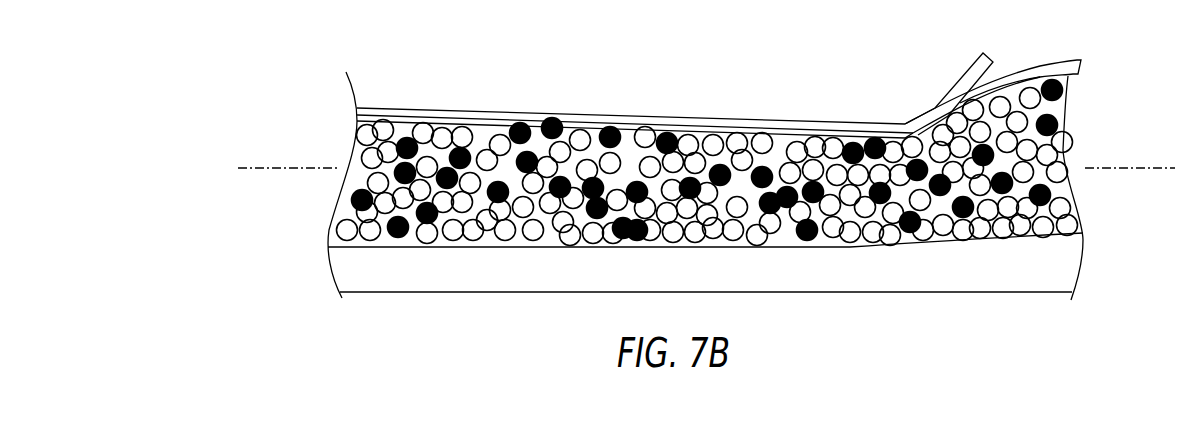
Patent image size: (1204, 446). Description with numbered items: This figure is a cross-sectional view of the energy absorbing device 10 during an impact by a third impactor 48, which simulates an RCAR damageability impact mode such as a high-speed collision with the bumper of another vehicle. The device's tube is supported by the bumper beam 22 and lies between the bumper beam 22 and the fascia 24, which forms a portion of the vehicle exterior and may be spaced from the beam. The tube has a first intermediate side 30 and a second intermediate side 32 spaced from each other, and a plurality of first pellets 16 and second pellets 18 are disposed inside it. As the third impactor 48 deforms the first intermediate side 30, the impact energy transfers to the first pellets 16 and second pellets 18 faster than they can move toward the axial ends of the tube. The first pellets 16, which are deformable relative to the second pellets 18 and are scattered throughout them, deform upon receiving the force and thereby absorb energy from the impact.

The energy absorbing device 10 is at (1150, 85).
The first pellets 16 is at (392, 148).
The second pellets 18 is at (350, 237).
The bumper beam 22 is at (993, 293).
The fascia 24 is at (1053, 65).
The first intermediate side 30 is at (997, 93).
The second intermediate side 32 is at (515, 250).
The third impactor 48 is at (942, 92).